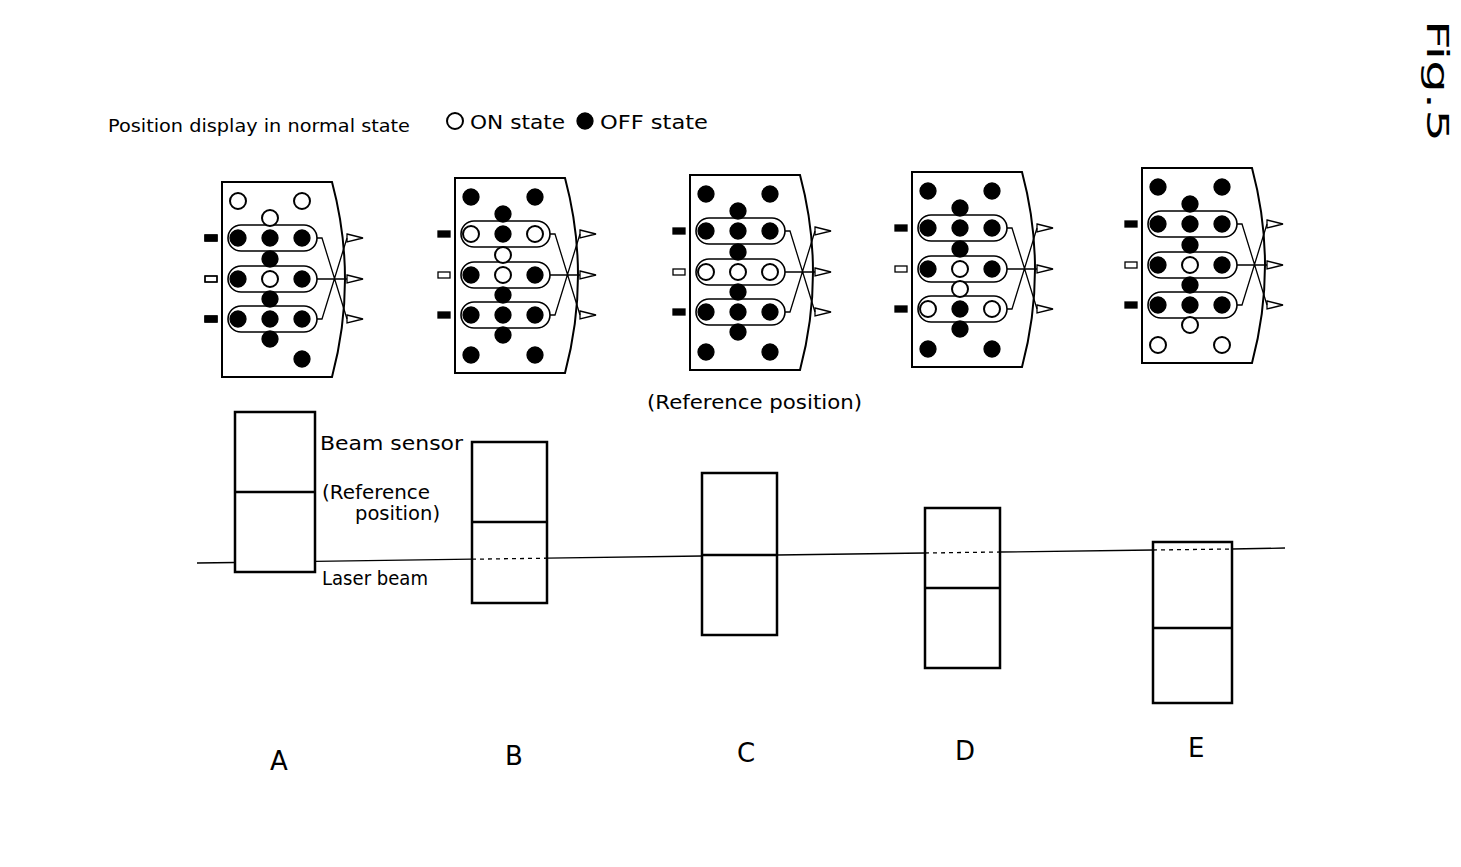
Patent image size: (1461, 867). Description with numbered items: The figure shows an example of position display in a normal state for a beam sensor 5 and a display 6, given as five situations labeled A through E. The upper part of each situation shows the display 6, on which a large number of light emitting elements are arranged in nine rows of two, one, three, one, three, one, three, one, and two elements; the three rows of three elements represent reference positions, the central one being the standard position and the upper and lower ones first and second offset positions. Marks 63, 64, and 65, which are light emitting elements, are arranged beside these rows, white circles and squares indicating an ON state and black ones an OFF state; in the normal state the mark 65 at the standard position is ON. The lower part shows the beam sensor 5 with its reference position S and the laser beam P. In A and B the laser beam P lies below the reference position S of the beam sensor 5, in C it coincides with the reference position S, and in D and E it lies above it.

The beam sensor 5 is at (272, 573).
The display 6 is at (761, 252).
The mark 63 is at (208, 233).
The mark 64 is at (210, 328).
The mark 65 is at (200, 285).
The reference position S is at (260, 492).
The laser beam P is at (442, 560).